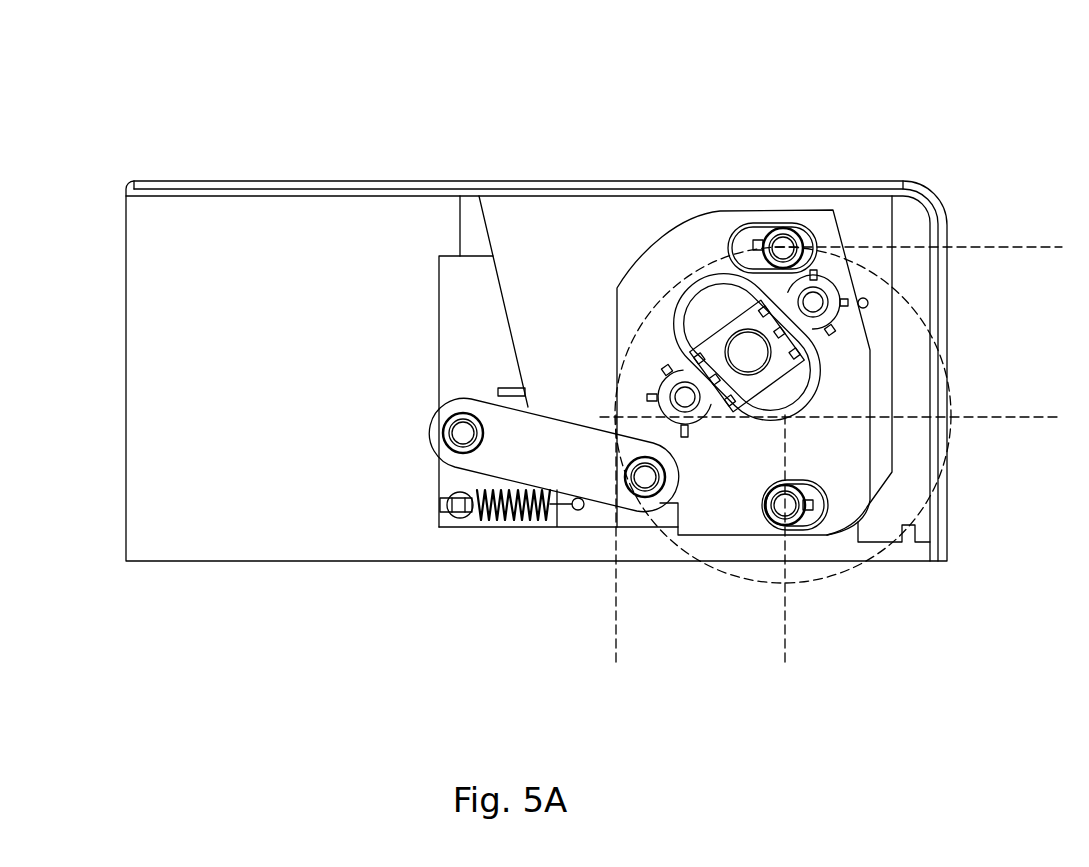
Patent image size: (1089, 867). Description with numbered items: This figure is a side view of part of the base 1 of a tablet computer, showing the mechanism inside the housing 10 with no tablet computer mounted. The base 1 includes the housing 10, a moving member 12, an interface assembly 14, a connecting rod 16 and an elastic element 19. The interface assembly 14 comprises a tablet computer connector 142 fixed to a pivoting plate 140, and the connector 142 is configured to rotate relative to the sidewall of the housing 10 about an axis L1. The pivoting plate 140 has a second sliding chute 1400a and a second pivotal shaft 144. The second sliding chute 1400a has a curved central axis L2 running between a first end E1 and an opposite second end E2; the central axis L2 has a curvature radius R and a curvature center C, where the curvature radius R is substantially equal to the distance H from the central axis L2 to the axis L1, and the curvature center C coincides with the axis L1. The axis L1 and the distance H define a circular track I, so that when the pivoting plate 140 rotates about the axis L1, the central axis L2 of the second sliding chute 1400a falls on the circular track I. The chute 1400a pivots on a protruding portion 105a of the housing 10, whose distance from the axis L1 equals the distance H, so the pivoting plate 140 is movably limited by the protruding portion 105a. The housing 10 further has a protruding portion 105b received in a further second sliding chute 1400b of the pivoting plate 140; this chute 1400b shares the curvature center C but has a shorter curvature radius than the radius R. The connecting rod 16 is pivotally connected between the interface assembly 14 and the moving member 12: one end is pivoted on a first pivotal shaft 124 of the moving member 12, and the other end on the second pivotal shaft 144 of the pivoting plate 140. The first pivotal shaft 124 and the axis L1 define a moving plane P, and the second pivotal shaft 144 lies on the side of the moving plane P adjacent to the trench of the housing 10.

The base 1 is at (47, 42).
The housing 10 is at (317, 130).
The moving member 12 is at (483, 322).
The interface assembly 14 is at (1008, 193).
The connecting rod 16 is at (578, 478).
The elastic element 19 is at (507, 522).
The protruding portion 105a is at (797, 231).
The protruding portion 105b is at (788, 510).
The first pivotal shaft 124 is at (461, 447).
The pivoting plate 140 is at (840, 234).
The tablet computer connector 142 is at (748, 353).
The second pivotal shaft 144 is at (645, 478).
The second sliding chute 1400a is at (793, 214).
The second sliding chute 1400b is at (818, 538).
The moving plane P is at (980, 406).
The curvature center C is at (785, 415).
The distance H is at (1058, 252).
The curvature radius R is at (780, 658).
The circular track I is at (893, 283).
The first end E1 is at (820, 245).
The second end E2 is at (718, 250).
The axis L1 is at (805, 418).
The central axis L2 is at (752, 246).